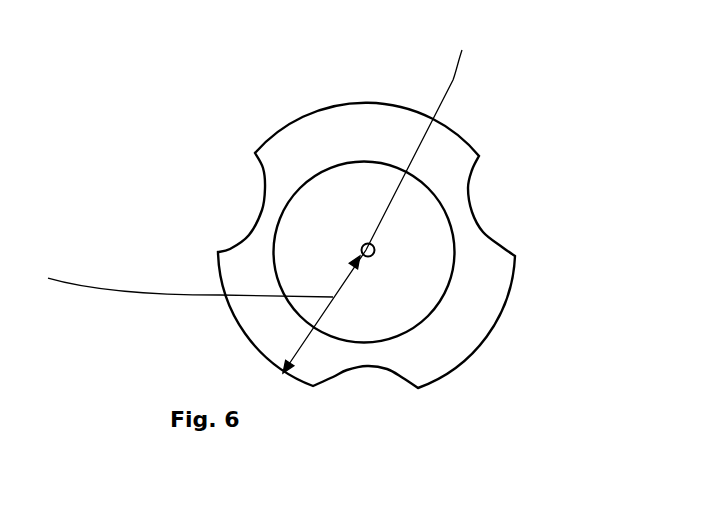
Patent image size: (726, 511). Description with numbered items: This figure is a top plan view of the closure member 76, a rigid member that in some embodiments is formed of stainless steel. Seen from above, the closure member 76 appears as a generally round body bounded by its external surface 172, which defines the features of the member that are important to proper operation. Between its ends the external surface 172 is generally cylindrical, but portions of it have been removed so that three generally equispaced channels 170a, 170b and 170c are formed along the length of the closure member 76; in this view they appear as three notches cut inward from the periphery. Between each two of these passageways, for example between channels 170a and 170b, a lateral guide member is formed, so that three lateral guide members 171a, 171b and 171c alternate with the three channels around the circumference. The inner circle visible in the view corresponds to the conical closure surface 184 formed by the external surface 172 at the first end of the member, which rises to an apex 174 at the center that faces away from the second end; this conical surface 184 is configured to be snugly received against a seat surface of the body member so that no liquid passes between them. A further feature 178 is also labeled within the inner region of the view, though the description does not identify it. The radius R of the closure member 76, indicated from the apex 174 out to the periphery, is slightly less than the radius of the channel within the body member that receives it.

The closure member 76 is at (287, 82).
The channel 170a is at (255, 203).
The channel 170b is at (487, 208).
The channel 170c is at (363, 390).
The lateral guide member 171a is at (260, 320).
The lateral guide member 171b is at (348, 120).
The lateral guide member 171c is at (445, 347).
The external surface 172 is at (380, 107).
The apex 174 is at (382, 201).
The inner circular hub 178 is at (415, 270).
The conical closure surface 184 is at (458, 268).
The radius R is at (181, 282).